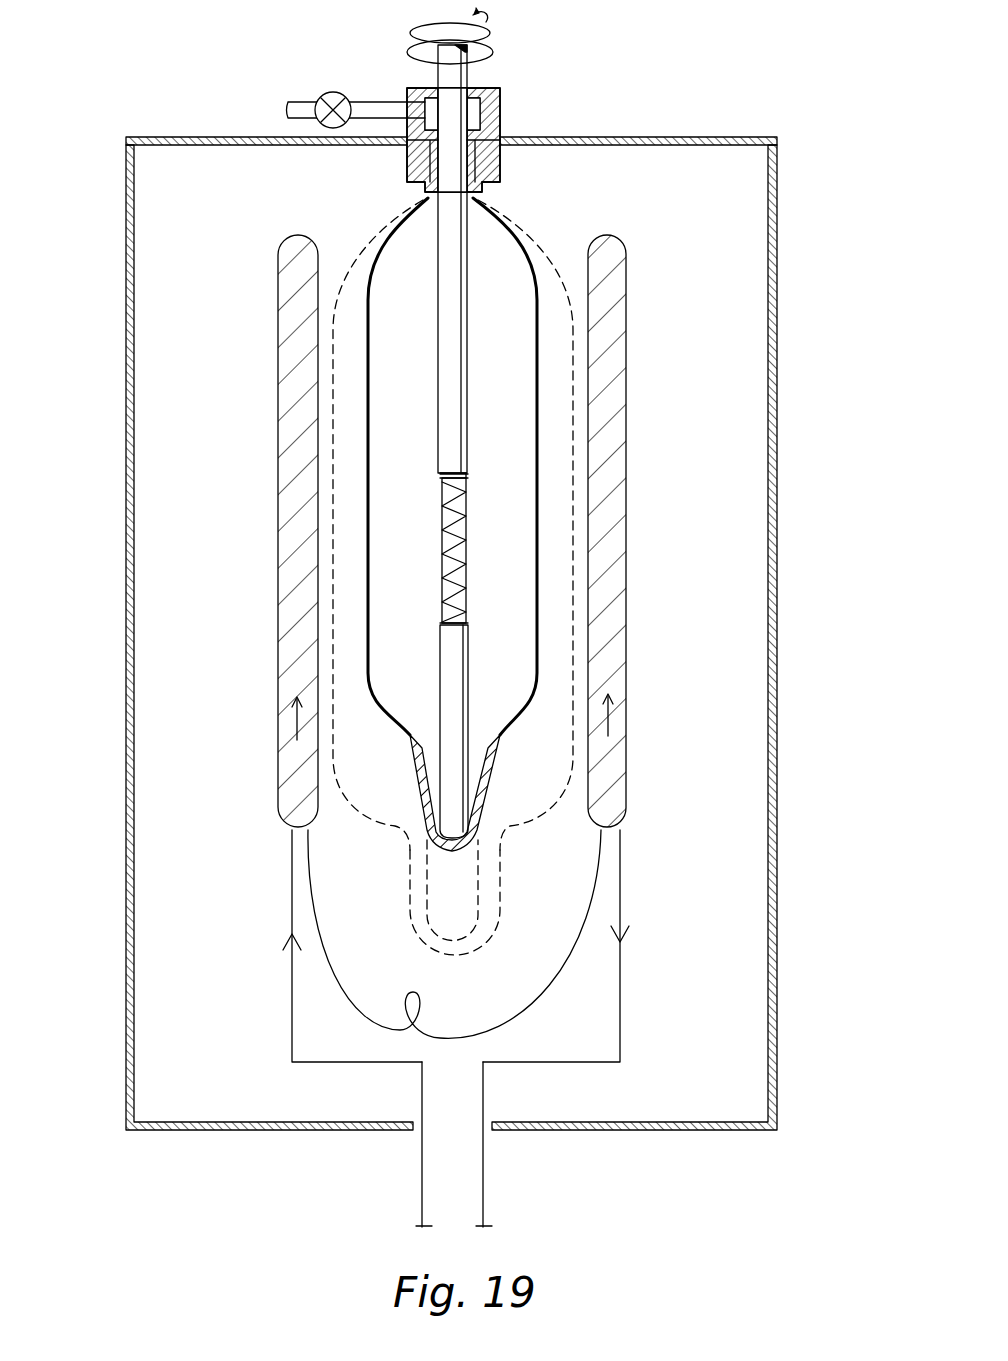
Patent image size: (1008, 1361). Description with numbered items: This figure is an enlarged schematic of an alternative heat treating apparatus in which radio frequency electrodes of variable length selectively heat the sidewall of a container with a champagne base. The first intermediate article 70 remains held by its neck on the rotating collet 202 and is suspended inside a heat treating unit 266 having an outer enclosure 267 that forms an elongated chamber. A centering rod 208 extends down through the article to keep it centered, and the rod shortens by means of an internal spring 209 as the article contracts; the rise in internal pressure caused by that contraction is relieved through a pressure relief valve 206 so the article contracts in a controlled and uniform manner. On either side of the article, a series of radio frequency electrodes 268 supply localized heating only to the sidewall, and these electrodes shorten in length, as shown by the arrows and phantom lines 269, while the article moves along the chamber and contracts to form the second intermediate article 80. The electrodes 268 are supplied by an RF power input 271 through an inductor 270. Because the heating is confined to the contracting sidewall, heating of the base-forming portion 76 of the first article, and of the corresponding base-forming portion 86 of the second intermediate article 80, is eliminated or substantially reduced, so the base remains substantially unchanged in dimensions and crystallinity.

The first intermediate article 70 is at (590, 455).
The base-forming portion 76 is at (500, 872).
The second intermediate article 80 is at (555, 548).
The base-forming portion 86 is at (492, 786).
The rotating collet 202 is at (502, 118).
The pressure relief valve 206 is at (340, 93).
The centering rod 208 is at (440, 666).
The internal spring 209 is at (440, 527).
The heat treating unit 266 is at (790, 657).
The outer enclosure 267 is at (620, 137).
The radio frequency electrodes 268 is at (278, 401).
The arrows and phantom lines 269 is at (318, 690).
The inductor 270 is at (556, 994).
The RF power input 271 is at (484, 1207).